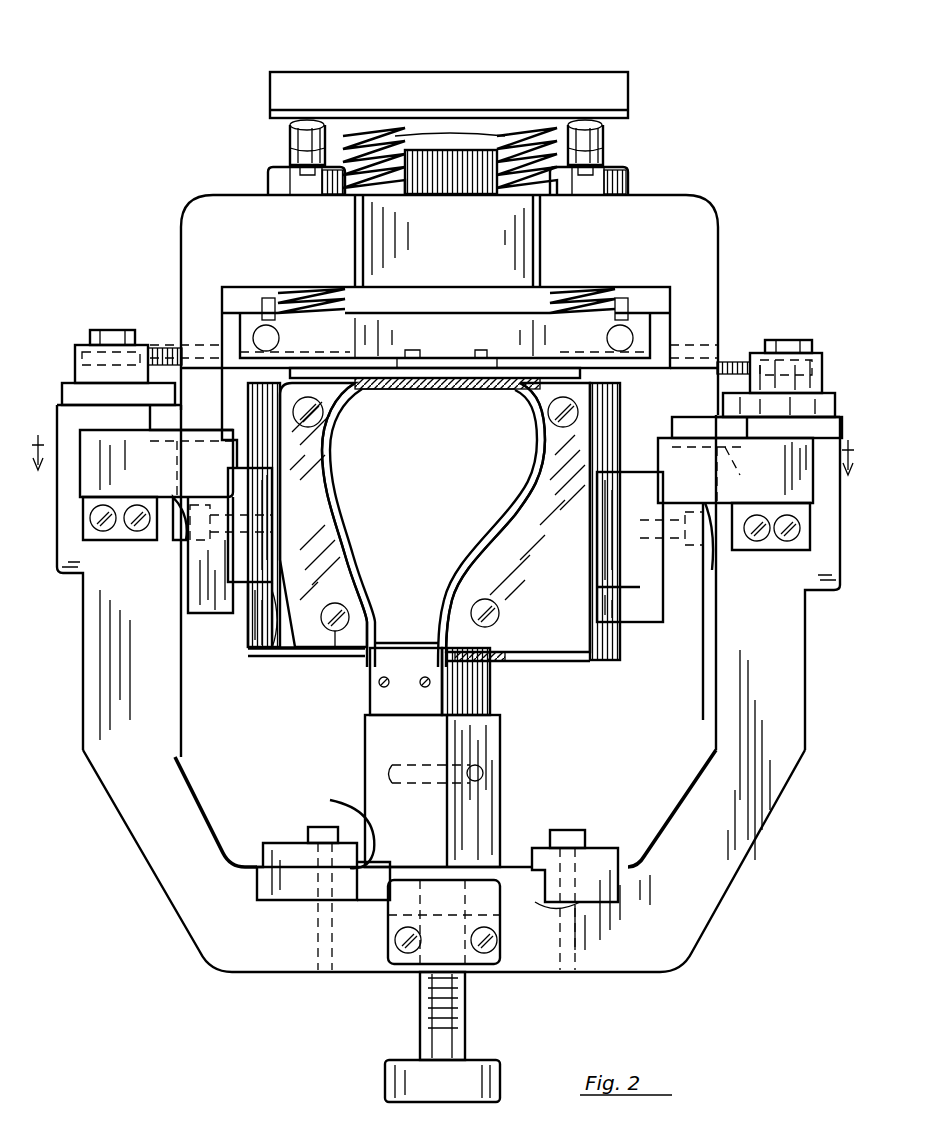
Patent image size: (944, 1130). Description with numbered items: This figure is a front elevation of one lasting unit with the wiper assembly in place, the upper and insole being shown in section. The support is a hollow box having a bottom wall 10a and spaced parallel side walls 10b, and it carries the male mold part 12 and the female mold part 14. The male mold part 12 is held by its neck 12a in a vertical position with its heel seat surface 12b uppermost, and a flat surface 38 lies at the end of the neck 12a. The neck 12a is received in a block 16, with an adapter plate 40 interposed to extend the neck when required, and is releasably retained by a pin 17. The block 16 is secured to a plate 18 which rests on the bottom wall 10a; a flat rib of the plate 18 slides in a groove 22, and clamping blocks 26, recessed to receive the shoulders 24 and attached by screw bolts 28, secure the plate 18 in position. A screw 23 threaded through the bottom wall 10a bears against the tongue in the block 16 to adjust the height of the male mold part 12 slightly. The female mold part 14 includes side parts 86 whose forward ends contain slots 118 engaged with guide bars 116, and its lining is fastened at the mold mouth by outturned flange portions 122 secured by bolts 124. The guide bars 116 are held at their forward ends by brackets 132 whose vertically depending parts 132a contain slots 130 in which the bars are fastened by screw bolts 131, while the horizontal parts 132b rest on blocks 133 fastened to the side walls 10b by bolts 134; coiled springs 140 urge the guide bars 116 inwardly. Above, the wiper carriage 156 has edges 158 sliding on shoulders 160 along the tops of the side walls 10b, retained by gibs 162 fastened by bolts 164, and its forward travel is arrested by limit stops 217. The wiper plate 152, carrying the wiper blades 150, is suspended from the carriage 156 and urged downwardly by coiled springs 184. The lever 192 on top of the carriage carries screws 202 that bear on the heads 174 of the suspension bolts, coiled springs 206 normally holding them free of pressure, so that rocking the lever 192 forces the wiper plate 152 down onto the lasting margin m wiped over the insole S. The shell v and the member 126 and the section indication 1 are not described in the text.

The lever 192 is at (482, 72).
The screws 202 is at (288, 150).
The heads of the bolts 174 is at (270, 182).
The coiled springs 206 is at (415, 140).
The wiper carriage 156 is at (718, 235).
The coiled springs 184 is at (585, 293).
The wiper plate 152 is at (660, 330).
The wiper blades 150 is at (585, 345).
The heel seat surface 12b is at (425, 365).
The lasting margin m is at (492, 366).
The insole S is at (452, 389).
The male mold part 12 is at (433, 479).
The neck 12a is at (395, 620).
The shell wall v is at (500, 522).
The bolts 124 is at (338, 660).
The female mold part 14 is at (290, 676).
The outturned flange portions 122 is at (520, 590).
The jaw liner 126 is at (500, 632).
The flat surface 38 is at (445, 655).
The adapter plate 40 is at (380, 705).
The block 16 is at (498, 815).
The pin 17 is at (483, 775).
The plate 18 is at (505, 856).
The shoulders 24 is at (329, 826).
The screw bolts 28 is at (306, 830).
The clamping blocks 26 is at (600, 848).
The groove 22 is at (380, 912).
The screw 23 is at (418, 1015).
The bottom wall 10a is at (512, 985).
The side walls 10b is at (140, 699).
The limit stops 217 is at (75, 350).
The edges 158 is at (157, 415).
The brackets 132 is at (120, 429).
The horizontal parts 132b is at (110, 472).
The blocks 133 is at (182, 497).
The bolts 134 is at (103, 532).
The screw bolts 131 is at (172, 585).
The vertically depending parts 132a is at (215, 600).
The slots 130 is at (230, 582).
The guide bars 116 is at (250, 655).
The slots 118 is at (258, 660).
The side parts 86 is at (250, 700).
The bolts 164 is at (790, 338).
The gibs 162 is at (825, 390).
The shoulders 160 is at (725, 430).
The coiled springs 140 is at (712, 560).
The section line 1 is at (441, 443).